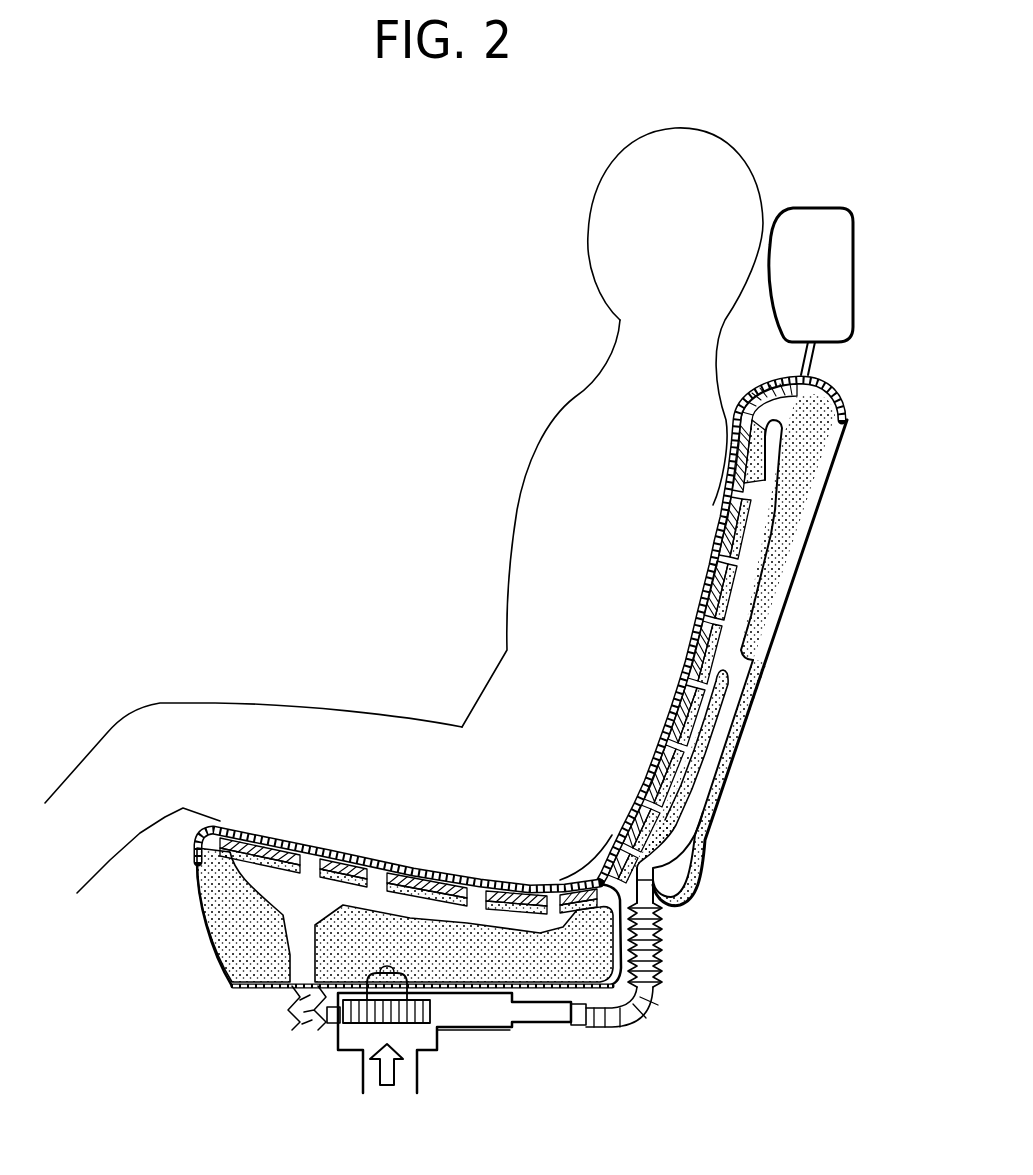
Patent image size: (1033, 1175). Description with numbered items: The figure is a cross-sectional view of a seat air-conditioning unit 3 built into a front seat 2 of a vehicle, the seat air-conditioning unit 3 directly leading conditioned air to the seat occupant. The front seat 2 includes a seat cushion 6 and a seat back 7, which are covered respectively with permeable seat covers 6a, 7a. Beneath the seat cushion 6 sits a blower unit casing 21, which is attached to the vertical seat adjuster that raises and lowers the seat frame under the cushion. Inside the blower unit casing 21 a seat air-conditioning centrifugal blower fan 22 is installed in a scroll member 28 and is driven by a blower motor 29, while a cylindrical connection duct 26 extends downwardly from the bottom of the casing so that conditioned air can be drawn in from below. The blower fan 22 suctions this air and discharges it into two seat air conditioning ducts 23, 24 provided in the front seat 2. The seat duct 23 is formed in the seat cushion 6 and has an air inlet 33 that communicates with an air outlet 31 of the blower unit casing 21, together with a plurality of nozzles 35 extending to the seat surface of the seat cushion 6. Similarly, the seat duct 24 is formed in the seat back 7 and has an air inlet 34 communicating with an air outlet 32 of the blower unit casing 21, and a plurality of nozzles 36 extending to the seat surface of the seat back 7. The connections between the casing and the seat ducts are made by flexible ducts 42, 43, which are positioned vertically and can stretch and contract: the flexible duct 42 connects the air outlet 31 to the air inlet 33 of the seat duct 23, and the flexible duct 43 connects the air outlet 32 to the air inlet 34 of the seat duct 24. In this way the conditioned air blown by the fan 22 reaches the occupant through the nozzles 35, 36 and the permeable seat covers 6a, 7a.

The front seat 2 is at (850, 378).
The seat air-conditioning unit 3 is at (525, 1045).
The seat cushion 6 is at (200, 920).
The seat cover 6a is at (319, 988).
The seat back 7 is at (827, 476).
The seat cover 7a is at (723, 497).
The blower unit casing 21 is at (342, 1058).
The seat air-conditioning centrifugal blower fan 22 is at (427, 993).
The seat air conditioning duct 23 is at (292, 898).
The seat air conditioning duct 24 is at (737, 657).
The connection duct 26 is at (420, 1077).
The scroll member 28 is at (475, 1028).
The blower motor 29 is at (384, 972).
The air outlet 31 is at (333, 1023).
The air outlet 32 is at (567, 1020).
The air inlet 33 is at (300, 965).
The air inlet 34 is at (677, 898).
The nozzles 35 is at (323, 868).
The nozzles 36 is at (700, 593).
The flexible duct 42 is at (310, 1012).
The flexible duct 43 is at (653, 983).